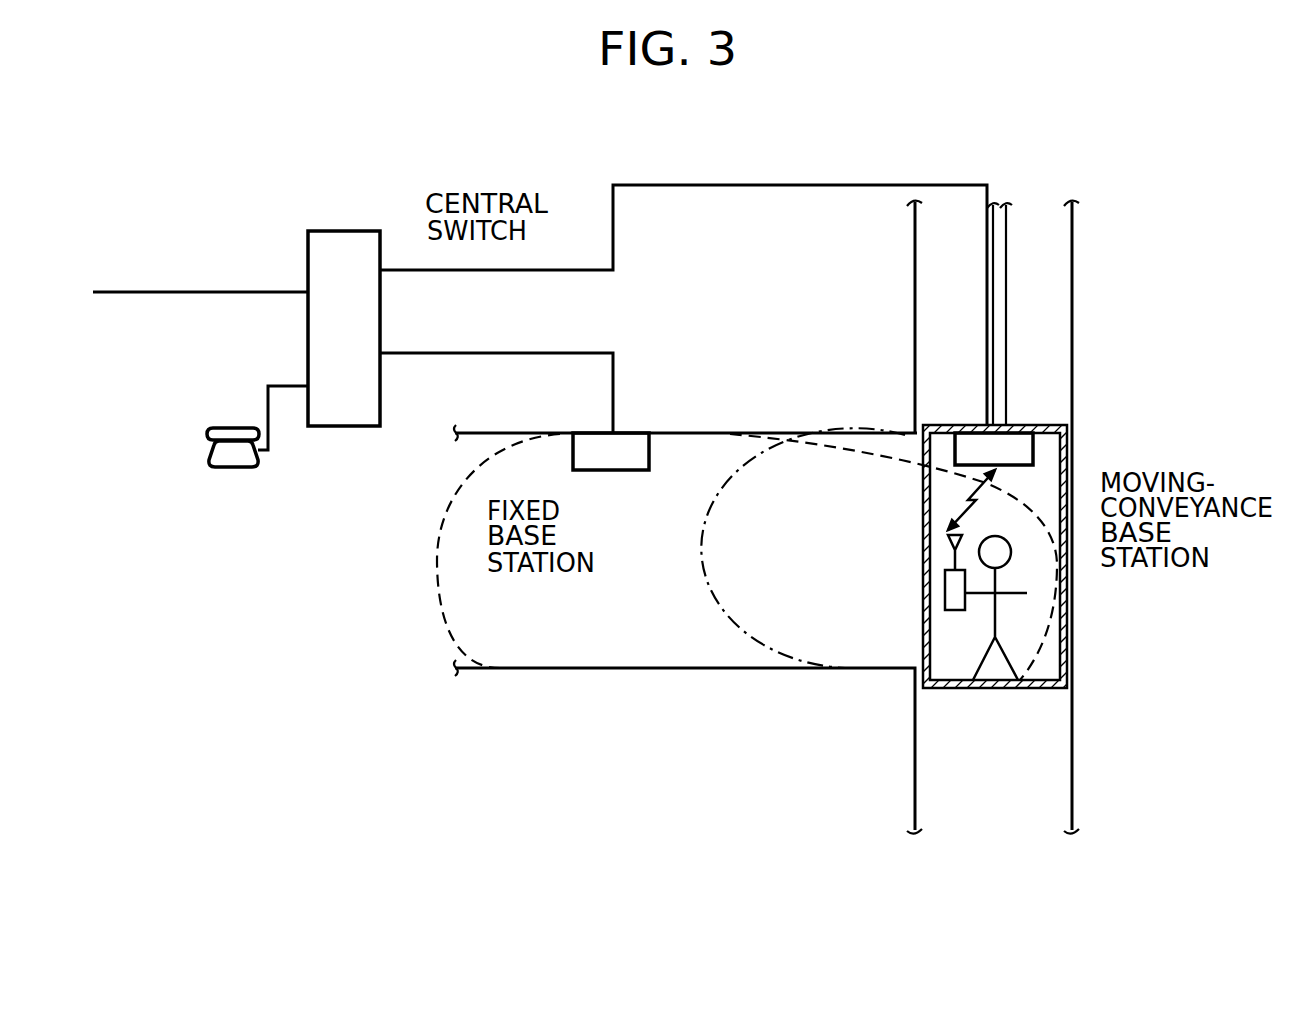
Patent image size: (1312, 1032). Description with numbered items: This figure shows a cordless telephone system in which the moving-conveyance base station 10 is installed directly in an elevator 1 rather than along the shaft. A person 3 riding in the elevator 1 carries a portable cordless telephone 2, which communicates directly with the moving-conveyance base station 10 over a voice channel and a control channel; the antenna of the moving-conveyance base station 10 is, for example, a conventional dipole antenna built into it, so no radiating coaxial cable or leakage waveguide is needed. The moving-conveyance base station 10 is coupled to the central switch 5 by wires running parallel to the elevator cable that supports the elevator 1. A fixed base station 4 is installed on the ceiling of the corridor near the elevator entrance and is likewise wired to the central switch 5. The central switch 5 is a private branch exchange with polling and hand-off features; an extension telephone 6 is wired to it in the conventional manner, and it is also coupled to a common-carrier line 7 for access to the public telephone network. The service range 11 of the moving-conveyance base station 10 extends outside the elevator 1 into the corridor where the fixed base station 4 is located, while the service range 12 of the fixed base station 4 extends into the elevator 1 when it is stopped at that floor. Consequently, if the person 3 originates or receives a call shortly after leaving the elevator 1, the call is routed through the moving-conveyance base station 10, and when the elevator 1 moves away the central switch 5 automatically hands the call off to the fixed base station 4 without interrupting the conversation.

The elevator 1 is at (922, 542).
The portable cordless telephone 2 is at (956, 532).
The person 3 is at (1011, 558).
The fixed base station 4 is at (573, 458).
The central switch 5 is at (380, 230).
The extension telephone 6 is at (235, 428).
The common-carrier line 7 is at (165, 292).
The moving-conveyance base station 10 is at (1040, 452).
The service range of the moving-conveyance base station 11 is at (747, 565).
The service range of the fixed base station 12 is at (438, 518).